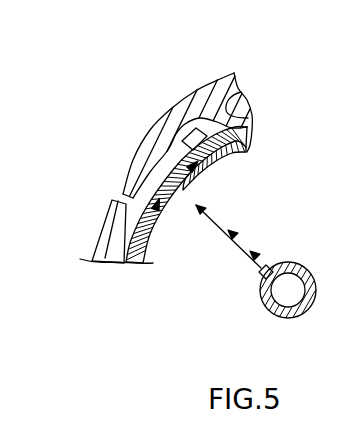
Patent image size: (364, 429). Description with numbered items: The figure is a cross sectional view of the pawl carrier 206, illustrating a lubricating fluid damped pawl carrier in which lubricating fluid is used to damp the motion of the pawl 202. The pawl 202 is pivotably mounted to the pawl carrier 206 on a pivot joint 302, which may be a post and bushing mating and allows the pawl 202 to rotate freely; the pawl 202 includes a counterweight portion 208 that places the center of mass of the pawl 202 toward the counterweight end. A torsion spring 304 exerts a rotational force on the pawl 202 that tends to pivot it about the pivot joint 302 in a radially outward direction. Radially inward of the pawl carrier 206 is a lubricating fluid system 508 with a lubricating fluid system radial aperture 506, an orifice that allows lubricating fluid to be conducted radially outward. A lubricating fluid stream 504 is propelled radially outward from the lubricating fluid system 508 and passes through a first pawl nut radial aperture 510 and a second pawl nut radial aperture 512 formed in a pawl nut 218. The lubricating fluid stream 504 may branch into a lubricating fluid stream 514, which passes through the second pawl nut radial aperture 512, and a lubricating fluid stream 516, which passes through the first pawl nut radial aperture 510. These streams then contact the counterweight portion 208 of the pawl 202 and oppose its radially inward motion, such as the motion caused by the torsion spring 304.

The pawl 202 is at (198, 87).
The pawl carrier 206 is at (105, 236).
The counterweight portion 208 is at (148, 162).
The pawl nut 218 is at (140, 266).
The pivot joint 302 is at (239, 107).
The torsion spring 304 is at (251, 117).
The lubricating fluid stream 504 is at (214, 220).
The lubricating fluid system radial aperture 506 is at (274, 266).
The lubricating fluid system 508 is at (290, 296).
The first pawl nut radial aperture 510 is at (237, 158).
The second pawl nut radial aperture 512 is at (157, 258).
The lubricating fluid stream 514 is at (179, 198).
The lubricating fluid stream 516 is at (199, 187).